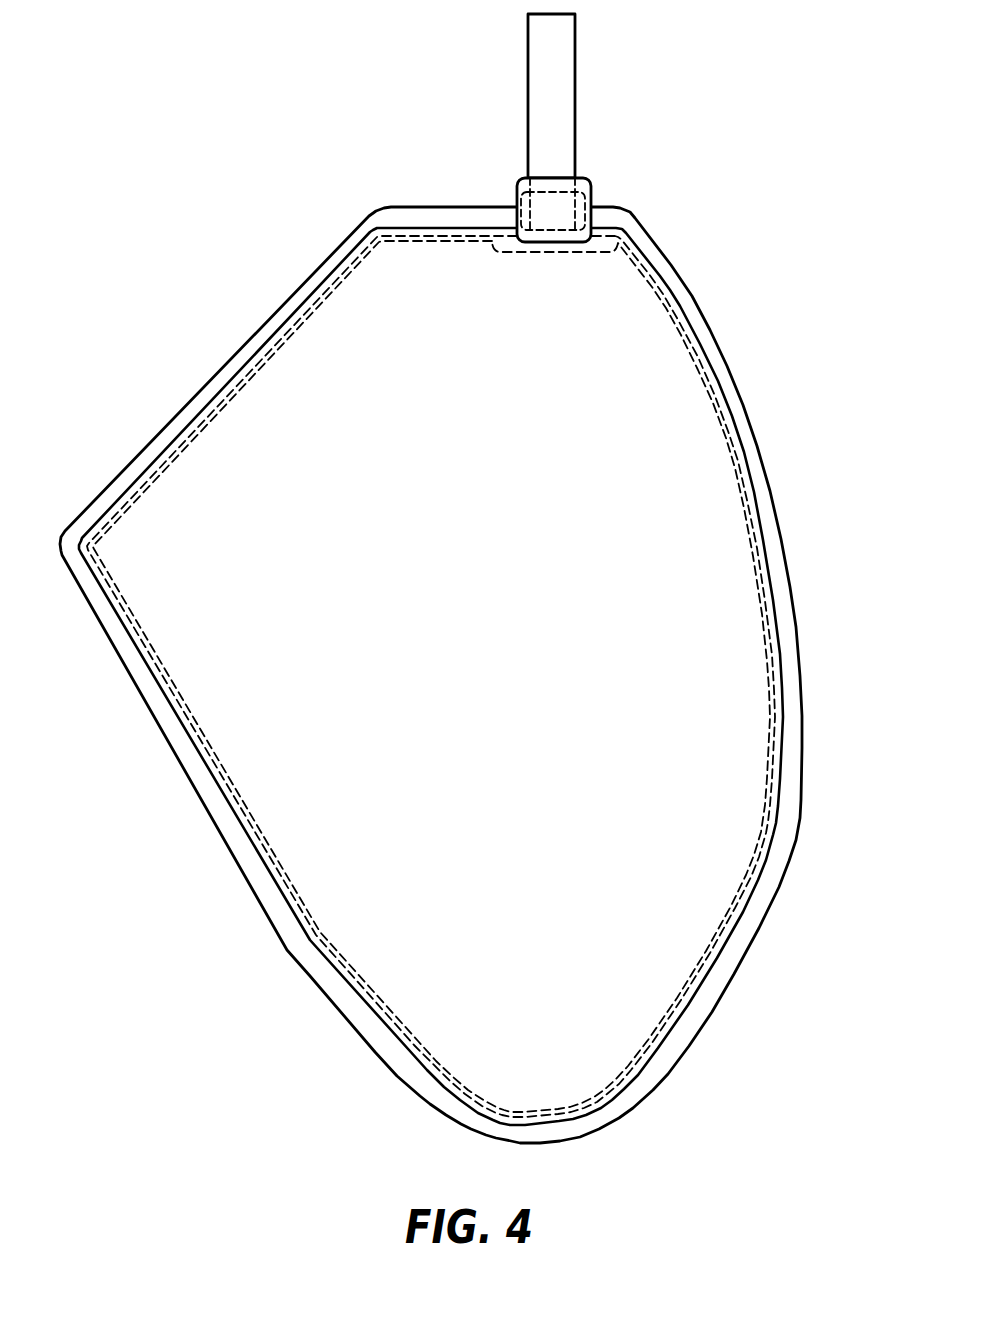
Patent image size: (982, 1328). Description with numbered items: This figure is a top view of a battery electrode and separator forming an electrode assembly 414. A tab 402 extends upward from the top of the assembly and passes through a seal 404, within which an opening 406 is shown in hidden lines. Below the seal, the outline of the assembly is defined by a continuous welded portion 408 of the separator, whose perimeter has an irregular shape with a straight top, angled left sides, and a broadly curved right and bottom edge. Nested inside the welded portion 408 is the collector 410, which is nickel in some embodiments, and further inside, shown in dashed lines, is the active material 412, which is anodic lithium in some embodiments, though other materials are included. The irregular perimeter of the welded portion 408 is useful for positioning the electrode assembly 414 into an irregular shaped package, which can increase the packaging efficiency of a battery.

The tab 402 is at (576, 78).
The seal 404 is at (582, 178).
The opening 406 is at (555, 191).
The continuous welded portion 408 is at (710, 350).
The collector 410 is at (735, 463).
The active material 412 is at (745, 533).
The electrode assembly 414 is at (178, 140).